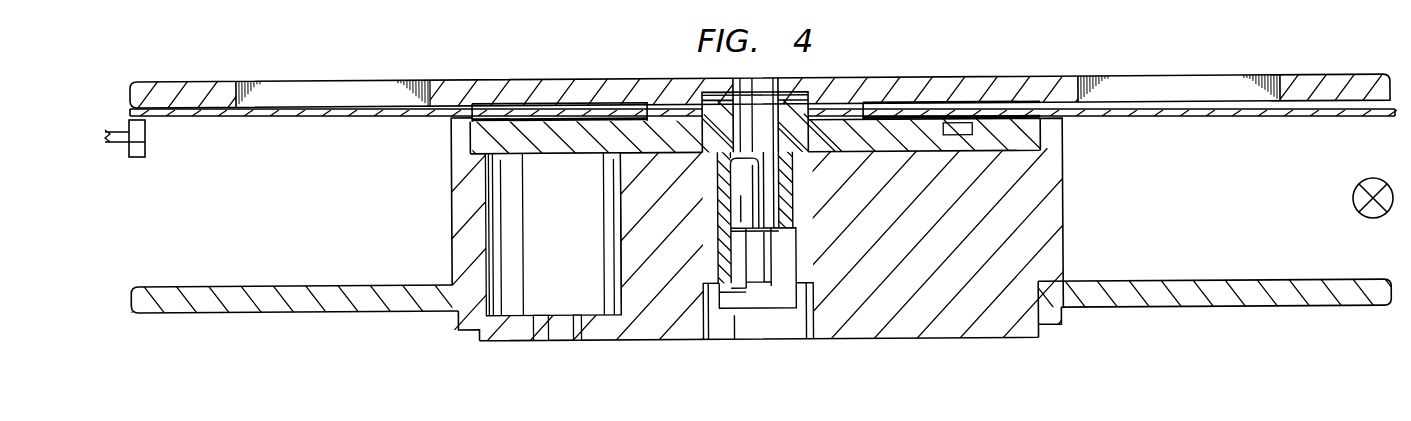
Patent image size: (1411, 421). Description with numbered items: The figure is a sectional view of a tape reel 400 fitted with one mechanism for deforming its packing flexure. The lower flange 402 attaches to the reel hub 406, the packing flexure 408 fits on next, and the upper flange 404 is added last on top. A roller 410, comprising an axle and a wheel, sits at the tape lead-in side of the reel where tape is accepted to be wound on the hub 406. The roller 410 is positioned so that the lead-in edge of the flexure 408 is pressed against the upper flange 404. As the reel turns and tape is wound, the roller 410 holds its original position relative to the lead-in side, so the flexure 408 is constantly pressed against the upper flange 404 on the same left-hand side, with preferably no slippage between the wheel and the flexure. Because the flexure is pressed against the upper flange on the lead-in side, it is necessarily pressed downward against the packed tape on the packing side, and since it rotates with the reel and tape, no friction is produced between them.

The reel 400 is at (611, 58).
The lower flange 402 is at (183, 314).
The upper flange 404 is at (952, 78).
The reel hub 406 is at (1062, 214).
The packing flexure 408 is at (1205, 118).
The roller 410 is at (141, 135).